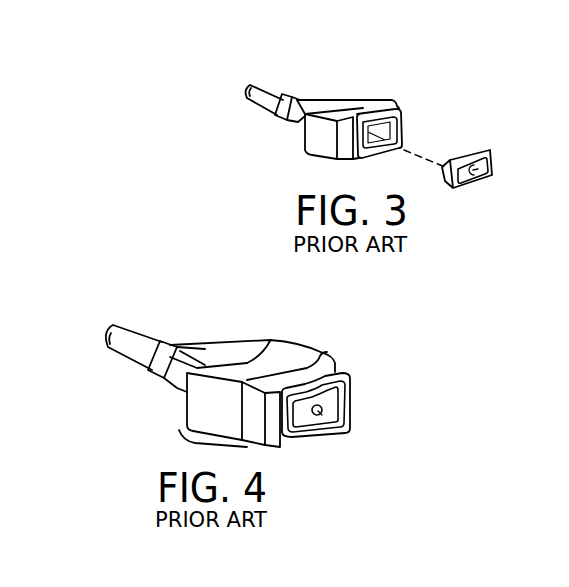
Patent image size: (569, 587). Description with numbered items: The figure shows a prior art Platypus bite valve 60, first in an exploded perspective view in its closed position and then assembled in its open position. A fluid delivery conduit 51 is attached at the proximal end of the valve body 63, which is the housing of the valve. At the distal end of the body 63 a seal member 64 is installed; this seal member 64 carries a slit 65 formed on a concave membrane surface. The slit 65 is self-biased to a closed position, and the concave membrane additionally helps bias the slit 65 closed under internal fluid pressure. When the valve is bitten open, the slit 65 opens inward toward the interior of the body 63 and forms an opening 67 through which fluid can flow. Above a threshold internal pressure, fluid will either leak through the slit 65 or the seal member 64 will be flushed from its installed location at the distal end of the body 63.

In FIG. 3, the fluid delivery conduit 51 is at (265, 92).
In FIG. 4, the fluid delivery conduit 51 is at (137, 340).
In FIG. 3, the prior art Platypus bite valve 60 is at (225, 152).
In FIG. 4, the prior art Platypus bite valve 60 is at (114, 442).
In FIG. 3, the valve body 63 is at (358, 102).
In FIG. 4, the valve body 63 is at (207, 408).
In FIG. 3, the seal member 64 is at (458, 159).
In FIG. 3, the slit 65 is at (478, 167).
In FIG. 4, the slit 65 is at (352, 408).
In FIG. 4, the opening 67 is at (322, 413).